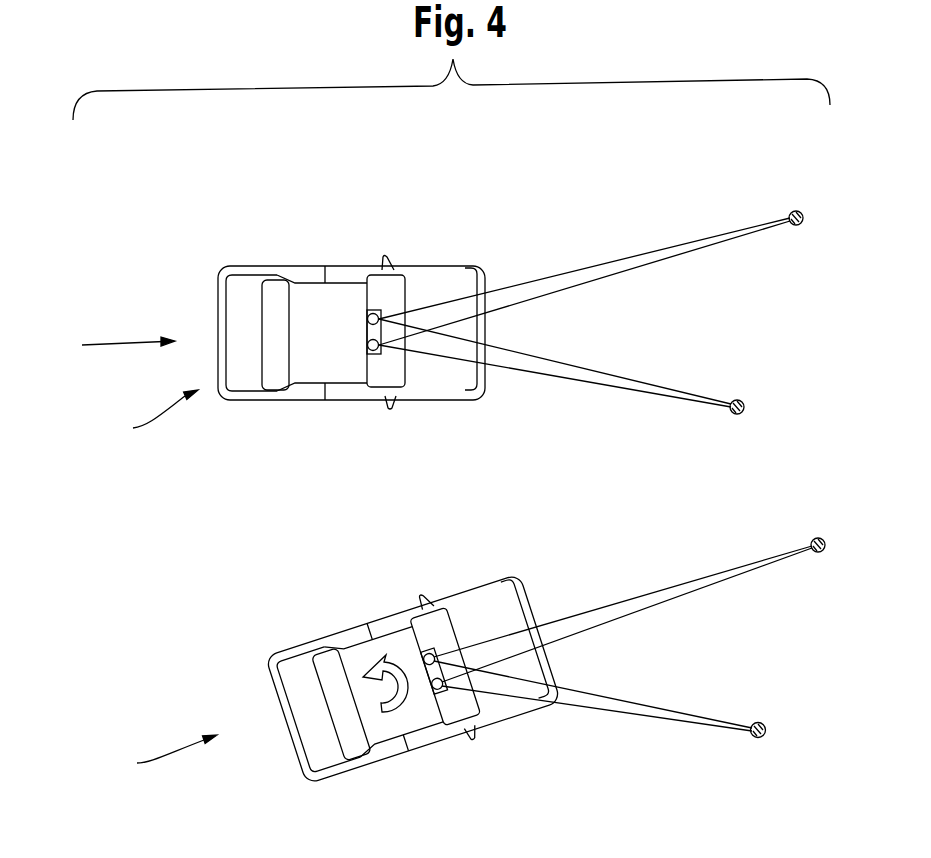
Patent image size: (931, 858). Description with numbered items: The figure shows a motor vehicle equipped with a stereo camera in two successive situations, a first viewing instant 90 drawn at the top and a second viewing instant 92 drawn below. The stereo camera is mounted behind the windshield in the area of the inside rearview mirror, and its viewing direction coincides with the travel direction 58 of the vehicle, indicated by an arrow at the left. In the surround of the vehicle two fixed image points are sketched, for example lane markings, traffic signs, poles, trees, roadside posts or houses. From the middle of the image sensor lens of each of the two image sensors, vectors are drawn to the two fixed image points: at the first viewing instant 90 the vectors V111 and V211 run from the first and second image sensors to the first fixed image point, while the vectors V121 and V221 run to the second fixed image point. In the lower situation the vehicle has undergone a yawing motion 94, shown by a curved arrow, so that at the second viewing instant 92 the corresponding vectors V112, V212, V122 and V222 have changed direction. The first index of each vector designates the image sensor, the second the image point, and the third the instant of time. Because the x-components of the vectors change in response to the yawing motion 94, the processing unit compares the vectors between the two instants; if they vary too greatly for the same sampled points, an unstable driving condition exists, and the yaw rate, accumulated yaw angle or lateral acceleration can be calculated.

The travel direction 58 is at (123, 342).
The first viewing instant 90 is at (151, 424).
The second viewing instant 92 is at (161, 759).
The yawing motion 94 is at (388, 668).
The vector from first image sensor to first fixed image point at first viewing insta V111 is at (590, 263).
The vector from second image sensor to first fixed image point at first viewing inst V211 is at (717, 247).
The vector from first image sensor to second fixed image point at first viewing inst V121 is at (563, 363).
The vector from second image sensor to second fixed image point at first viewing ins V221 is at (620, 385).
The vector from first image sensor to first fixed image point at second viewing inst V112 is at (625, 598).
The vector from second image sensor to first fixed image point at second viewing ins V212 is at (728, 567).
The vector from first image sensor to second fixed image point at second viewing ins V122 is at (607, 697).
The vector from second image sensor to second fixed image point at second viewing in V222 is at (645, 712).